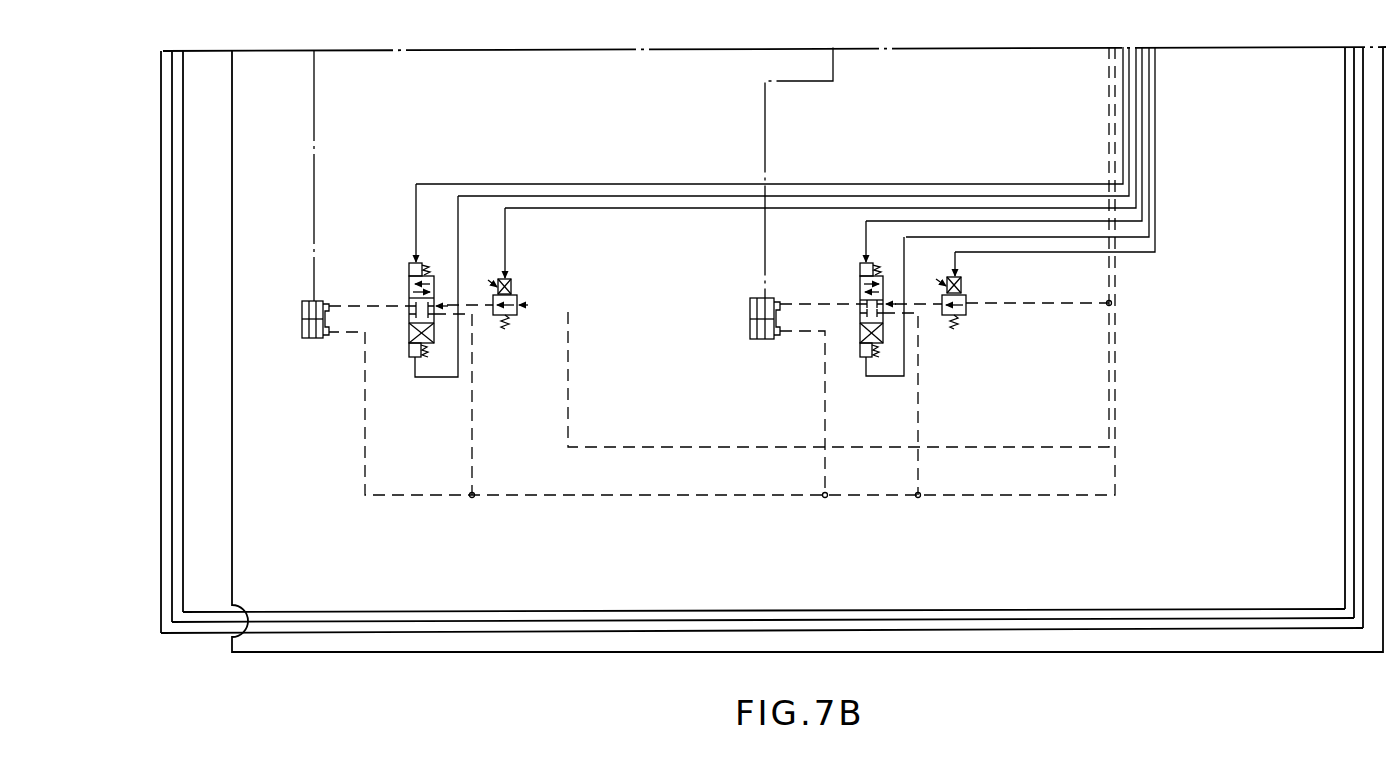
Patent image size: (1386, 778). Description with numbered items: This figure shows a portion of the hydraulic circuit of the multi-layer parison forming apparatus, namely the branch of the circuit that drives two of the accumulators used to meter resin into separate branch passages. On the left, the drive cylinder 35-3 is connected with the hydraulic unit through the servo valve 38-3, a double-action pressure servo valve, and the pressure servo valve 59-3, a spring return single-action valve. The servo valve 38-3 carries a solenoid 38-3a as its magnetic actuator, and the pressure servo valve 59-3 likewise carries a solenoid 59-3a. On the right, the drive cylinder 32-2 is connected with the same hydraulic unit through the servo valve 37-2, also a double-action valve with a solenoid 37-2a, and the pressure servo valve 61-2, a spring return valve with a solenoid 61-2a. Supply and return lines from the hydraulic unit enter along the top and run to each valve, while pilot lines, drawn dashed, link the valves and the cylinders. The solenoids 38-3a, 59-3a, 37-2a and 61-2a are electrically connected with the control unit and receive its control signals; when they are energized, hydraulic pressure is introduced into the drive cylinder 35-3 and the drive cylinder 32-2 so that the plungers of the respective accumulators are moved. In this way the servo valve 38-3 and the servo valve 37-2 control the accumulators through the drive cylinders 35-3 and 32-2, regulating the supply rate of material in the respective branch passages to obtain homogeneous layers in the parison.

The drive cylinder 35-3 is at (297, 301).
The servo valve 38-3 is at (405, 341).
The solenoid 38-3a is at (408, 267).
The pressure servo valve 59-3 is at (519, 297).
The solenoid 59-3a is at (508, 281).
The drive cylinder 32-2 is at (747, 300).
The servo valve 37-2 is at (858, 341).
The solenoid 37-2a is at (858, 267).
The pressure servo valve 61-2 is at (968, 297).
The solenoid 61-2a is at (963, 282).